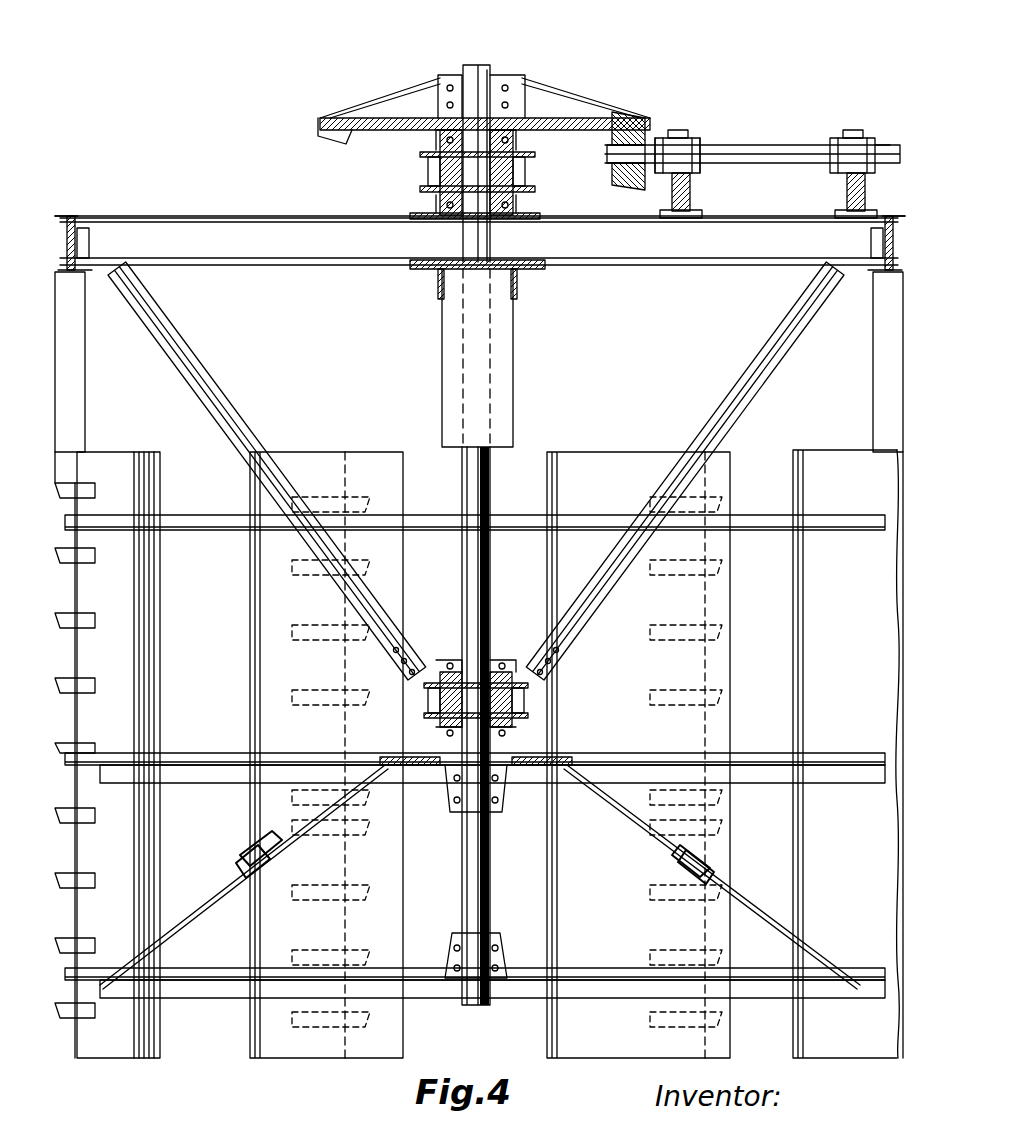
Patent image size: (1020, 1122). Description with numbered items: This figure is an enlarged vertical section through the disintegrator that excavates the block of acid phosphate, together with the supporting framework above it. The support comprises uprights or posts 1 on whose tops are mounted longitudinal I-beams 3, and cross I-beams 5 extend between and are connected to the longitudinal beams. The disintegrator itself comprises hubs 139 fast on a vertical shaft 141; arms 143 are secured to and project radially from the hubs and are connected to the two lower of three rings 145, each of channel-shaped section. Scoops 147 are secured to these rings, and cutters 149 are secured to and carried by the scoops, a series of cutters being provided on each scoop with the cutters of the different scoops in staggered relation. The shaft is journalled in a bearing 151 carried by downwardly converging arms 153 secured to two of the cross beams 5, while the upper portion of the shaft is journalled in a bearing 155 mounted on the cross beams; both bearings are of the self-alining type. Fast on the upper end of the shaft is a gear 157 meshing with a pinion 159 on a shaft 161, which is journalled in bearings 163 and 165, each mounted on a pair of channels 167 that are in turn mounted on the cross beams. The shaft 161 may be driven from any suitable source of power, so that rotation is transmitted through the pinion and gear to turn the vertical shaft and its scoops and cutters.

The upright 1 is at (78, 366).
The longitudinal I-beam 3 is at (73, 216).
The cross I-beam 5 is at (262, 228).
The hub 139 is at (492, 933).
The vertical shaft 141 is at (490, 874).
The arm 143 is at (172, 780).
The ring 145 is at (182, 515).
The scoop 147 is at (100, 688).
The cutter 149 is at (88, 628).
The bearing 151 is at (530, 703).
The downwardly converging arm 153 is at (760, 380).
The bearing 155 is at (425, 172).
The gear 157 is at (555, 116).
The pinion 159 is at (642, 133).
The shaft 161 is at (762, 163).
The bearing 163 is at (700, 150).
The bearing 165 is at (850, 138).
The channel 167 is at (670, 196).